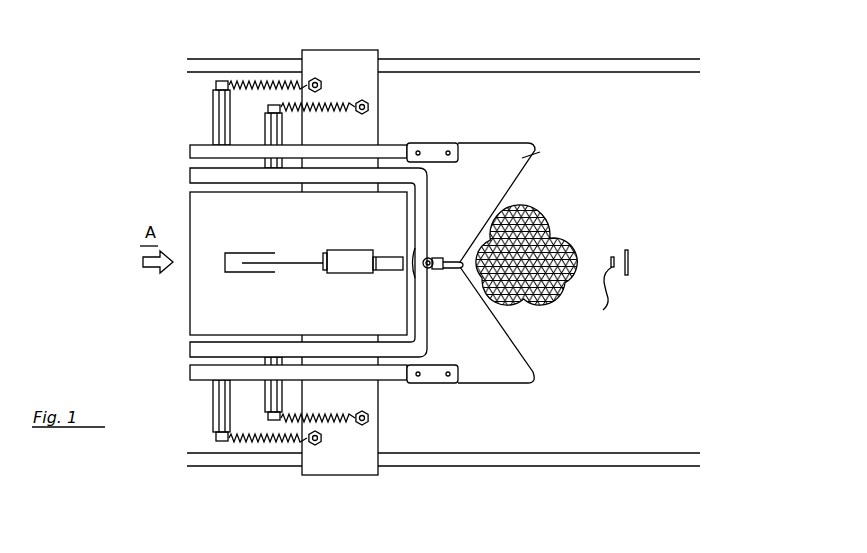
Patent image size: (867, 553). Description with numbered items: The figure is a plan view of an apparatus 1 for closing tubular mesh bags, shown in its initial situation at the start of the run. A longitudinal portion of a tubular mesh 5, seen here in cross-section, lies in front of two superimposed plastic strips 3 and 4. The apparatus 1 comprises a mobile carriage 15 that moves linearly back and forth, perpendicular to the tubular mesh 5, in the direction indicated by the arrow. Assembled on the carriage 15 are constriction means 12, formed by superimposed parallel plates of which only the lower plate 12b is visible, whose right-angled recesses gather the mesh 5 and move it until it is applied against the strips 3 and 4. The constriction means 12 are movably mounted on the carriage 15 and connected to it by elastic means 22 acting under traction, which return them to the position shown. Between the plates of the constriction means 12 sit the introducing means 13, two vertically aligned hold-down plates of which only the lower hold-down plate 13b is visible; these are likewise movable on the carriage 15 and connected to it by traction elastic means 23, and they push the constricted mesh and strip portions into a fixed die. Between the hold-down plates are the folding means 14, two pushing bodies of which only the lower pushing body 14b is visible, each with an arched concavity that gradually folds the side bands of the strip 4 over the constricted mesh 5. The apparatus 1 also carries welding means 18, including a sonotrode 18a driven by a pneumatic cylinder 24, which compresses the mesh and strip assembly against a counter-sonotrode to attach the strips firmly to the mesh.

The apparatus 1 is at (167, 153).
The plastic strip 3 is at (604, 297).
The plastic strip 4 is at (630, 255).
The tubular mesh 5 is at (532, 227).
The constriction means 12 is at (510, 142).
The lower plate 12b is at (522, 158).
The introducing means 13 is at (422, 345).
The lower hold-down plate 13b is at (433, 270).
The folding means 14 is at (393, 323).
The lower pushing body 14b is at (412, 248).
The mobile carriage 15 is at (360, 458).
The welding means 18 is at (348, 252).
The sonotrode 18a is at (385, 267).
The elastic means 22 is at (243, 83).
The elastic means 23 is at (335, 107).
The pneumatic cylinder 24 is at (245, 273).